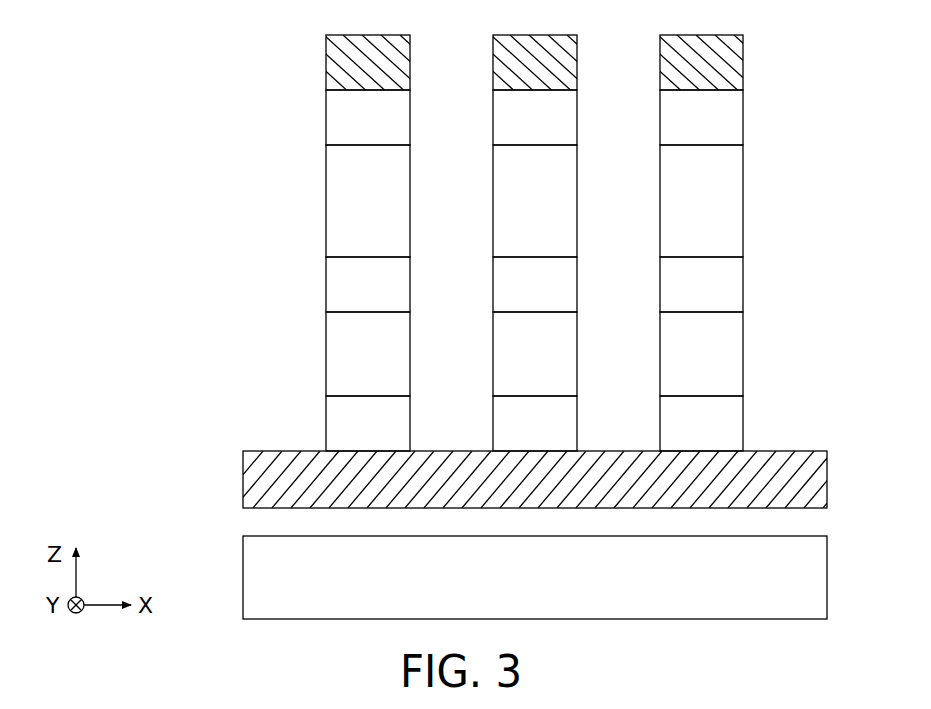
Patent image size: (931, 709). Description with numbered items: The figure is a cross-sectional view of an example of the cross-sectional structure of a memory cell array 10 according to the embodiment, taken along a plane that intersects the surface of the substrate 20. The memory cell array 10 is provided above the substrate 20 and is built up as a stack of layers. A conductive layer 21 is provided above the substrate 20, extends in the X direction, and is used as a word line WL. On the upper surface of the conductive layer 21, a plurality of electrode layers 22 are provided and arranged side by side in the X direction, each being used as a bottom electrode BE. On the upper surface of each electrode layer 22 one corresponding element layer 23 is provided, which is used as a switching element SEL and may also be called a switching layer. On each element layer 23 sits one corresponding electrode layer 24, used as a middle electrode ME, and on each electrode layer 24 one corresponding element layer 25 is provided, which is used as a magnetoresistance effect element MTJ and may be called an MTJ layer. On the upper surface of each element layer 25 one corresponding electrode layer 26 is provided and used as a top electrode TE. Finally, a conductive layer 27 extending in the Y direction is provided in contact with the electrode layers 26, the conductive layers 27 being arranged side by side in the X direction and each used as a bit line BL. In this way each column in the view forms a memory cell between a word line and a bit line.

The memory cell array 10 is at (100, 81).
The substrate 20 is at (243, 592).
The conductive layer 21 is at (243, 490).
The electrode layer 22 is at (326, 425).
The element layer 23 is at (326, 351).
The electrode layer 24 is at (326, 285).
The element layer 25 is at (326, 197).
The electrode layer 26 is at (326, 118).
The conductive layer 27 is at (326, 65).